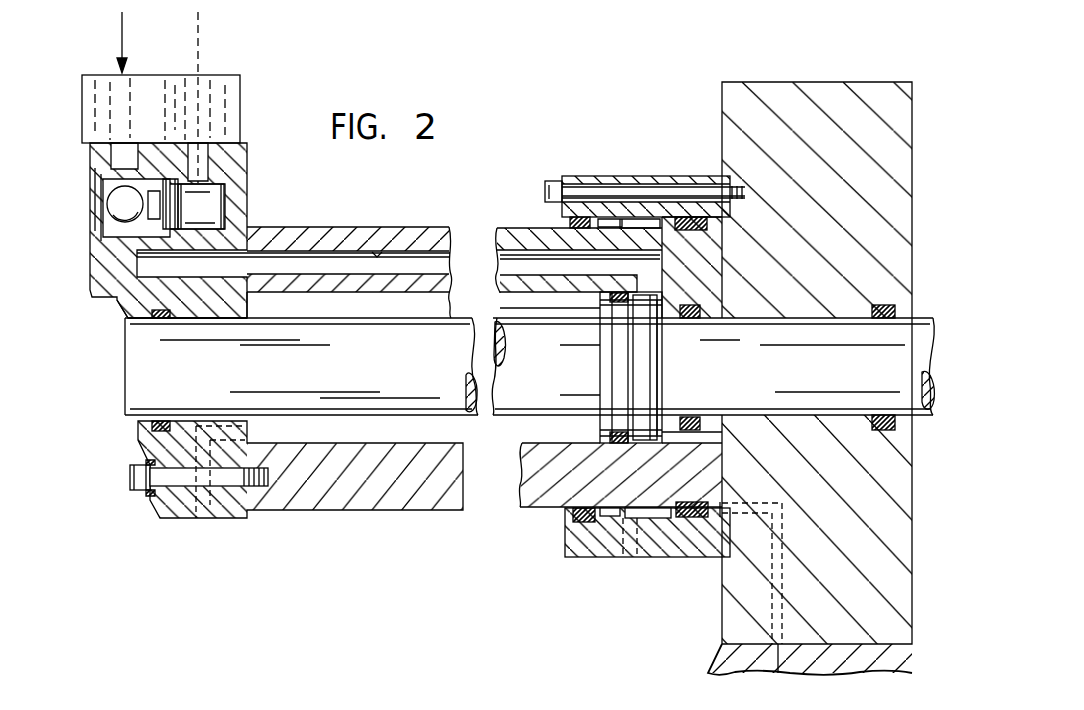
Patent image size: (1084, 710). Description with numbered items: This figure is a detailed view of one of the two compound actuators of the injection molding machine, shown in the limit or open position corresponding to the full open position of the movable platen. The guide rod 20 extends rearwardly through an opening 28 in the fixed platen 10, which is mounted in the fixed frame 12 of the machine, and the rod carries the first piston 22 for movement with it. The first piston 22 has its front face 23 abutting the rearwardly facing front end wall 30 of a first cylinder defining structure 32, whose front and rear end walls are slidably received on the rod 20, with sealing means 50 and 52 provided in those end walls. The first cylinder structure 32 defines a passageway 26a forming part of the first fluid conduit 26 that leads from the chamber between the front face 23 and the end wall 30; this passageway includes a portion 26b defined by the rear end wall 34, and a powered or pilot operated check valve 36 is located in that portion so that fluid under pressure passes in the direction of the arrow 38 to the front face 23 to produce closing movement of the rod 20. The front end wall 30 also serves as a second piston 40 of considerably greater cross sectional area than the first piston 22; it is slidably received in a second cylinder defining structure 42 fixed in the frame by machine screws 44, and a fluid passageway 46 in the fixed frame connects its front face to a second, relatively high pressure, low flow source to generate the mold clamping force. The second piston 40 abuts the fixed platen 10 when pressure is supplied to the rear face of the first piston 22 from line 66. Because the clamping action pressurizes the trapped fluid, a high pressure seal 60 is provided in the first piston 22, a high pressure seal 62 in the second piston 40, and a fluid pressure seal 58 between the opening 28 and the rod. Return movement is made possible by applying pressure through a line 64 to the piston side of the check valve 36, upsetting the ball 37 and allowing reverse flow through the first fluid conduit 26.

The fixed platen 10 is at (912, 142).
The fixed frame 12 is at (715, 658).
The guide rod 20 is at (930, 322).
The first piston 22 is at (603, 428).
The front face 23 is at (662, 374).
The first fluid conduit 26 is at (136, 95).
The passageway 26a is at (383, 250).
The portion of passageway 26b is at (123, 285).
The opening 28 is at (878, 305).
The front end wall 30 is at (655, 313).
The first cylinder defining structure 32 is at (540, 512).
The rear end wall 34 is at (245, 158).
The powered check valve 36 is at (198, 206).
The check valve element or ball 37 is at (104, 212).
The arrow 38 is at (118, 47).
The second piston 40 is at (640, 227).
The second cylinder defining structure 42 is at (616, 176).
The machine screws 44 is at (548, 194).
The fluid passageway 46 is at (778, 662).
The sealing means 50 is at (689, 420).
The sealing means 52 is at (160, 420).
The fluid pressure seal 58 is at (893, 437).
The high pressure seal 60 is at (615, 303).
The high pressure seal 62 is at (683, 215).
The line 64 is at (205, 82).
The line 66 is at (210, 520).